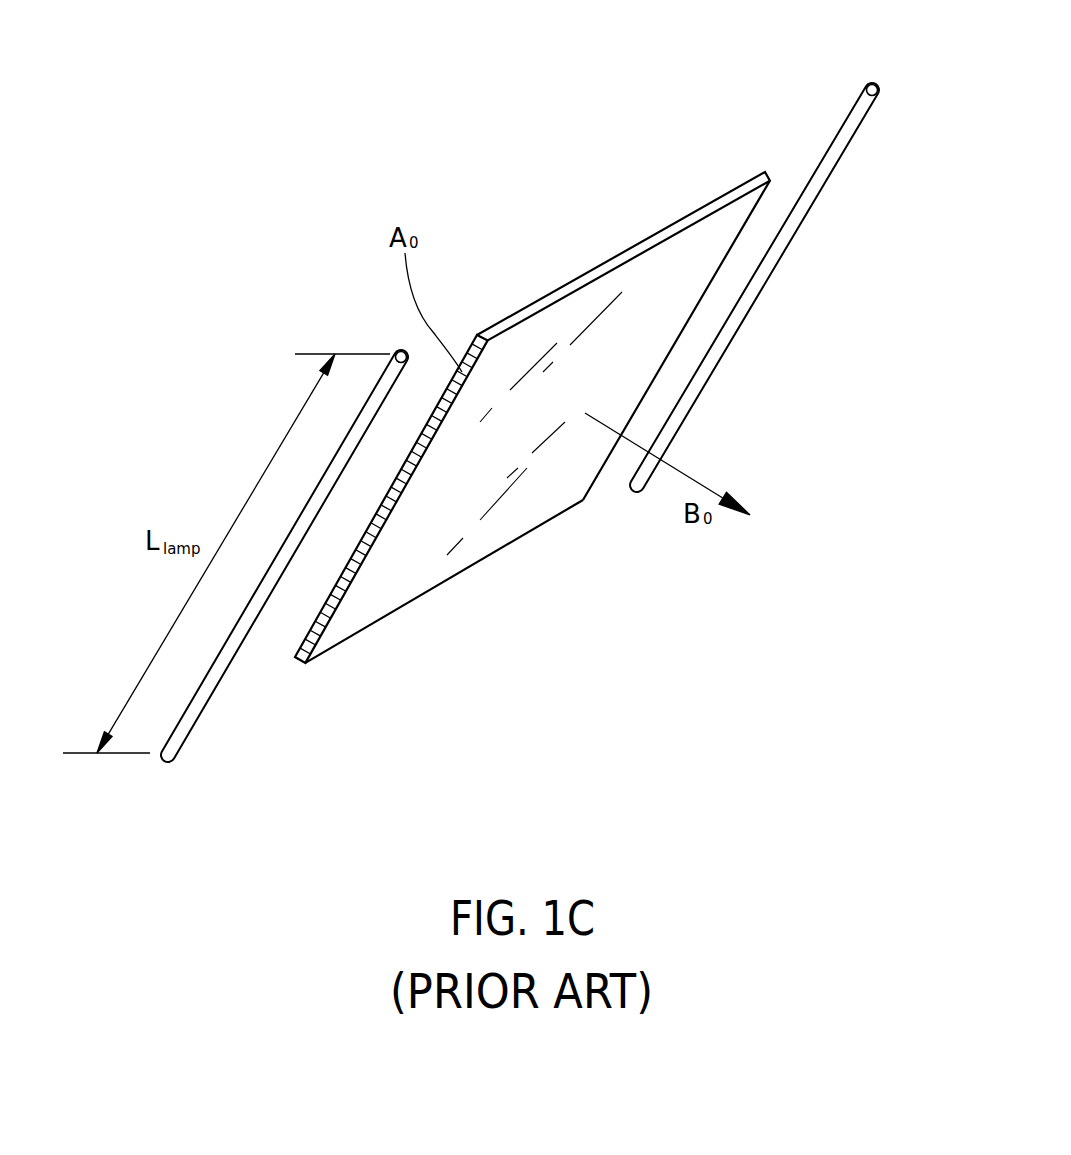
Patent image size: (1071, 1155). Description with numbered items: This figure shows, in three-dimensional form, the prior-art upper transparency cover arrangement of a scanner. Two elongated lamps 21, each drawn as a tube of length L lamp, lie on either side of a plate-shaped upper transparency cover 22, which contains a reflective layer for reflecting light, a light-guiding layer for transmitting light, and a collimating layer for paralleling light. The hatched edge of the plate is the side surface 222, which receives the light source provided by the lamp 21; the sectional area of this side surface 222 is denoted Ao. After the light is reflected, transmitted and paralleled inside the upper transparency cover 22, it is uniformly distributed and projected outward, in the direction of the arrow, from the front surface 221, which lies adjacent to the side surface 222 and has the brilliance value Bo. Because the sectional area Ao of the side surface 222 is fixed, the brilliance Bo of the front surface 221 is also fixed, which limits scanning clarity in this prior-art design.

The lamp 21 is at (372, 430).
The upper transparency cover 22 is at (532, 406).
The front surface 221 is at (470, 530).
The side surface 222 is at (320, 620).